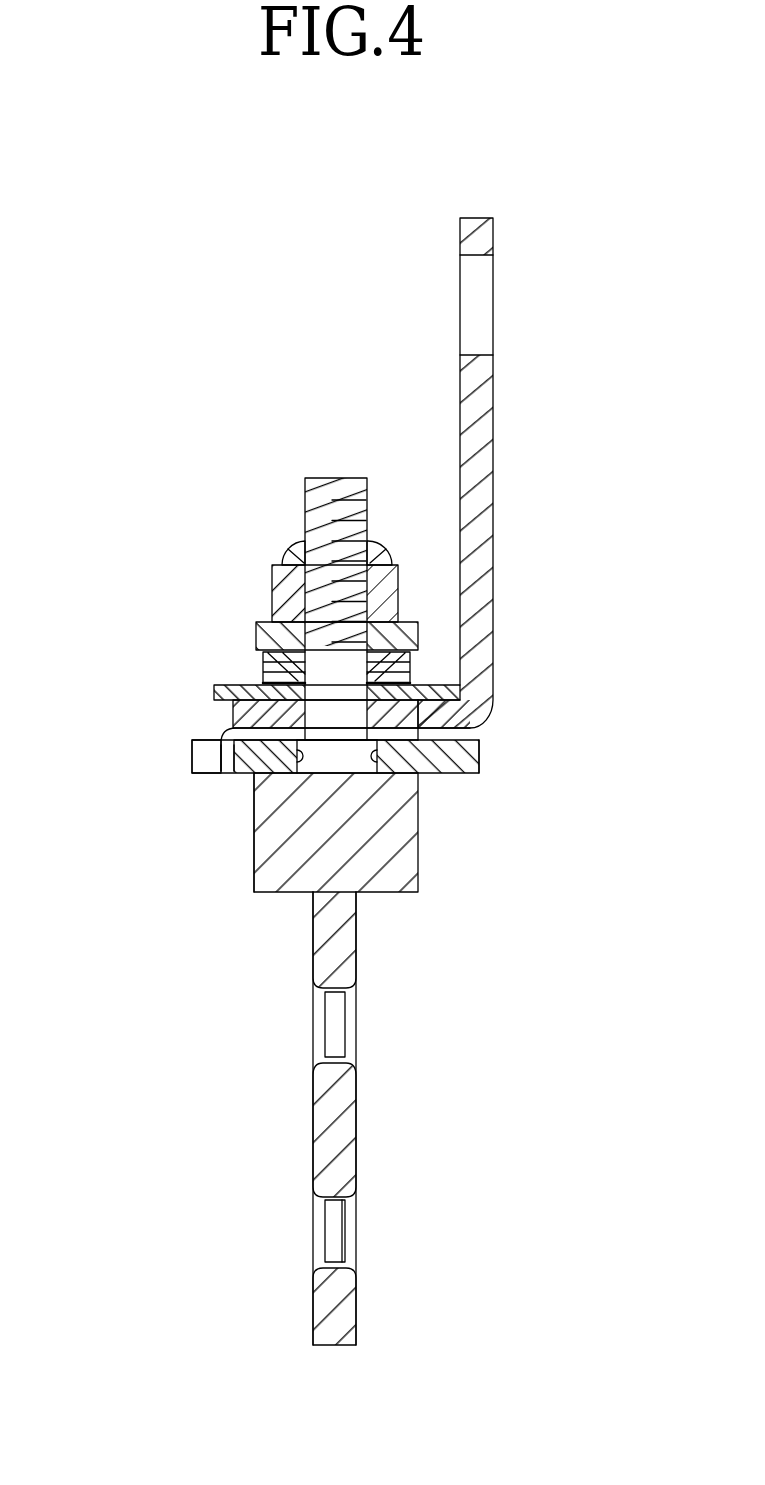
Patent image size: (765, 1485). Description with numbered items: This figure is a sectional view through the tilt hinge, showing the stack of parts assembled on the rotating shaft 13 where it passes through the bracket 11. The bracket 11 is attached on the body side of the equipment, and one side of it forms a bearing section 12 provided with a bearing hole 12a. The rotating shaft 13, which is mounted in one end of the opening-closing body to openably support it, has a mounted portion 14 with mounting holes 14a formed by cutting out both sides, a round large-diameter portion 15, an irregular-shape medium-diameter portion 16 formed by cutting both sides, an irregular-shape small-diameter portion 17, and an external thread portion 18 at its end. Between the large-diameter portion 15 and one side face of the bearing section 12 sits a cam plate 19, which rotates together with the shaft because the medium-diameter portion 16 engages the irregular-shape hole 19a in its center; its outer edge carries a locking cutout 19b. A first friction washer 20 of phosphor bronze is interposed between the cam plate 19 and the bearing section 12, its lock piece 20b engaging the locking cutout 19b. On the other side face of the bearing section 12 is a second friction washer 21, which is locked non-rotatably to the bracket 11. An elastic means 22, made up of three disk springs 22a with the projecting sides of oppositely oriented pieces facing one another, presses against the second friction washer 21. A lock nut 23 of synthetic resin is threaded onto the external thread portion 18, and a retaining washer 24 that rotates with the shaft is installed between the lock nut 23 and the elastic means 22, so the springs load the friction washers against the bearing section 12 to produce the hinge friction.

The bracket 11 is at (479, 499).
The bearing section 12 is at (227, 716).
The bearing hole 12a is at (253, 810).
The rotating shaft 13 is at (303, 970).
The mounted portion 14 is at (343, 1132).
The mounting hole 14a is at (335, 1050).
The large-diameter portion 15 is at (273, 877).
The irregular-shape medium-diameter portion 16 is at (362, 758).
The irregular-shape small-diameter portion 17 is at (470, 712).
The external thread portion 18 is at (335, 478).
The cam plate 19 is at (461, 763).
The irregular-shape hole 19a is at (479, 753).
The locking cutout 19b is at (232, 734).
The first friction washer 20 is at (416, 732).
The lock piece 20b is at (225, 773).
The second friction washer 21 is at (213, 692).
The elastic means 22 is at (236, 665).
The disk spring 22a is at (332, 652).
The lock nut 23 is at (278, 582).
The retaining washer 24 is at (255, 635).